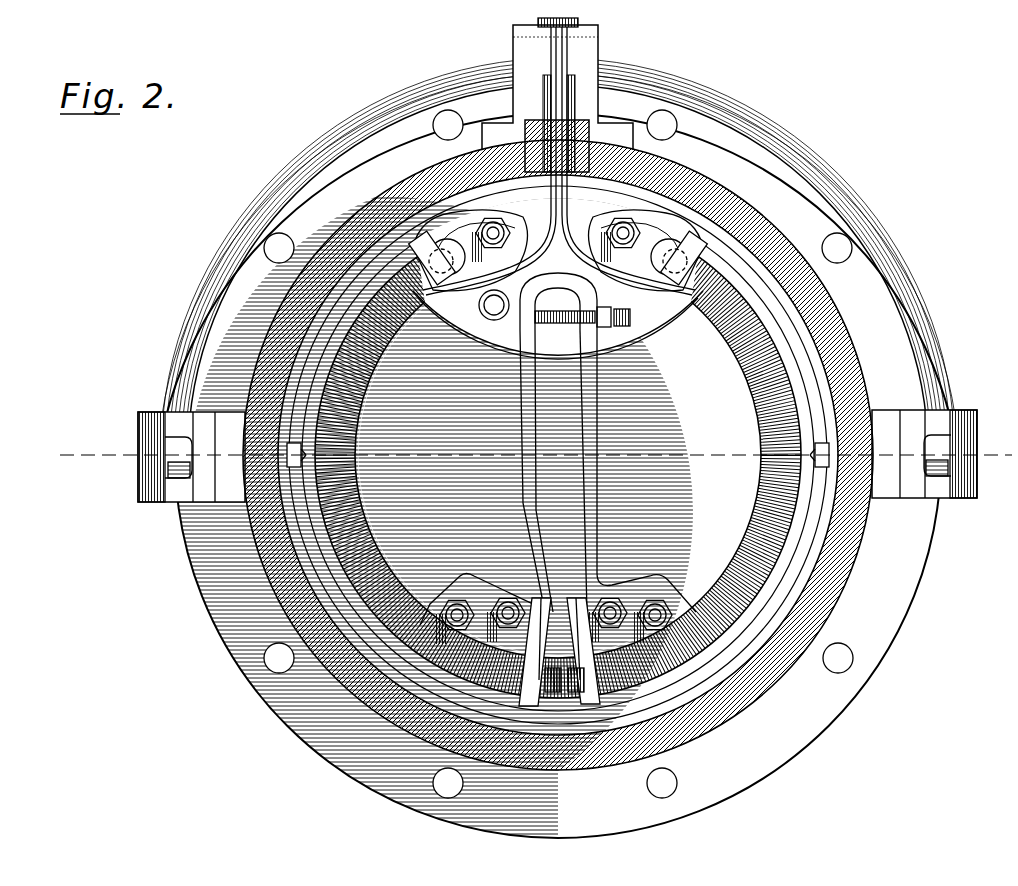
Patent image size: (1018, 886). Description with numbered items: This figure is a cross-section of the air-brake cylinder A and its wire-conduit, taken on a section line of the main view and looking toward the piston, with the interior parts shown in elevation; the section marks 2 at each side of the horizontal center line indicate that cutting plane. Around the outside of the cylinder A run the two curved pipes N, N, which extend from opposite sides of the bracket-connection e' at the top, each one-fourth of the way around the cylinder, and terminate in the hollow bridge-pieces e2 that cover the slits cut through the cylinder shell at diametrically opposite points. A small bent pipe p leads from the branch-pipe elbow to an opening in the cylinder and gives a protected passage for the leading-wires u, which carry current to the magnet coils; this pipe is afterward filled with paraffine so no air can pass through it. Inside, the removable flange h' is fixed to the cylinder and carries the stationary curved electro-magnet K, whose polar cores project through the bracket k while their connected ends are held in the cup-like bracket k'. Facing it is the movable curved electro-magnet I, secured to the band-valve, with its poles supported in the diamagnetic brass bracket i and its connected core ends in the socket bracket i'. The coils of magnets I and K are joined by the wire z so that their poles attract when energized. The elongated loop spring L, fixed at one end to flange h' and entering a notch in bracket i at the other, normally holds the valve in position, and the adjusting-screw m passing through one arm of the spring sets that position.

The curved pipes N is at (558, 448).
The cylinder A is at (770, 196).
The curved electro-magnet I is at (558, 455).
The stationary electro-magnet K is at (558, 455).
The cup-like bracket k' is at (558, 440).
The elongated loop spring L is at (598, 445).
The bracket-connection e' is at (557, 84).
The hollow bridge-pieces e2 is at (564, 466).
The small bent pipe p is at (572, 103).
The conductor wires u is at (559, 161).
The wire z is at (495, 320).
The adjusting-screw m is at (631, 317).
The cup-like or socket bracket i' is at (437, 258).
The removable flange h' is at (679, 258).
The bracket i is at (540, 652).
The bracket k is at (583, 651).
The section line 2 is at (536, 457).